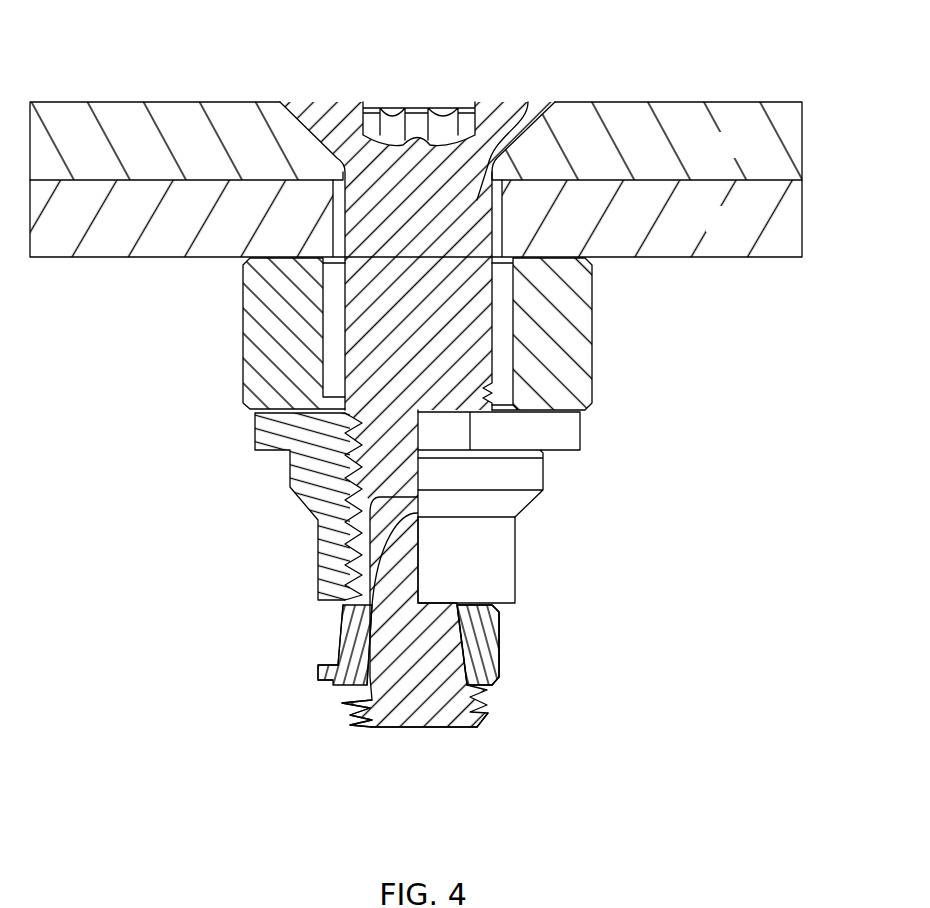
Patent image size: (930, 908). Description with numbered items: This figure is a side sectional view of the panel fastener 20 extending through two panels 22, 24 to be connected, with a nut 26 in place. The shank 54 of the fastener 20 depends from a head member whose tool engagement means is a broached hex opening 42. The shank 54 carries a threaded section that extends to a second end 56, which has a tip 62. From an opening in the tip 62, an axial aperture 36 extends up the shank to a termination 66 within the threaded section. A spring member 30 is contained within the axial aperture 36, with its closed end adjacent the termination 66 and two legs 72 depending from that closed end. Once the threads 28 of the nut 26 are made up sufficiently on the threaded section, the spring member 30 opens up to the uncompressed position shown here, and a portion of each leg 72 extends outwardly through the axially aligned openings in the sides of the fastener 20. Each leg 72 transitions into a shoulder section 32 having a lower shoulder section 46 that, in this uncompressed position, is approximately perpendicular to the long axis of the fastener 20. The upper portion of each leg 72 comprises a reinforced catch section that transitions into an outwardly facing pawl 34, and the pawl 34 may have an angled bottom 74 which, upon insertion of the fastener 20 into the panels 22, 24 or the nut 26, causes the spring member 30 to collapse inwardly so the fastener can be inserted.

The panel fastener 20 is at (430, 352).
The panel 22 is at (708, 155).
The panel 24 is at (708, 229).
The nut 26 is at (512, 503).
The threads 28 is at (357, 592).
The spring member 30 is at (520, 650).
The shoulder section 32 is at (343, 612).
The pawl 34 is at (500, 665).
The axial aperture 36 is at (417, 733).
The broached hex opening 42 is at (448, 102).
The lower shoulder section 46 is at (490, 603).
The shank 54 is at (528, 102).
The second end 56 is at (497, 723).
The tip 62 is at (360, 730).
The termination 66 is at (357, 517).
The leg 72 is at (360, 637).
The angled bottom 74 is at (328, 682).